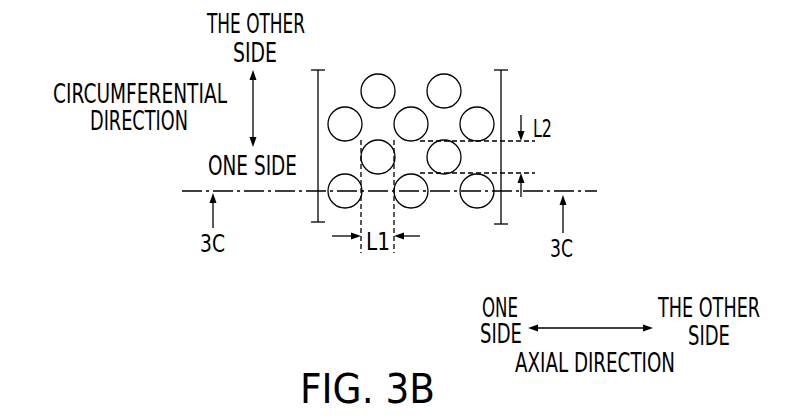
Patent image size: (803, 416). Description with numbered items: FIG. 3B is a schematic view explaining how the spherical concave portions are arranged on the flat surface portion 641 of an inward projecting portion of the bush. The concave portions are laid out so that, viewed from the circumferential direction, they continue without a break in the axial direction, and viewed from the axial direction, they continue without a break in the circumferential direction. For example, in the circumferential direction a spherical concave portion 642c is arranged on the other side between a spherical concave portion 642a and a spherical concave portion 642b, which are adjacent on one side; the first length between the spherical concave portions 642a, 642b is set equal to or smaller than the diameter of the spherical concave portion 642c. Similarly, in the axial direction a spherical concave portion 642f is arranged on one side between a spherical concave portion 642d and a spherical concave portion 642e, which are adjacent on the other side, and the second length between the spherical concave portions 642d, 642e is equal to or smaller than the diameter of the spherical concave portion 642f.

The flat surface portion 641 is at (433, 157).
The spherical concave portion 642a is at (343, 205).
The spherical concave portion 642b is at (418, 203).
The spherical concave portion 642c is at (375, 157).
The spherical concave portion 642d is at (485, 118).
The spherical concave portion 642e is at (482, 200).
The spherical concave portion 642f is at (450, 157).